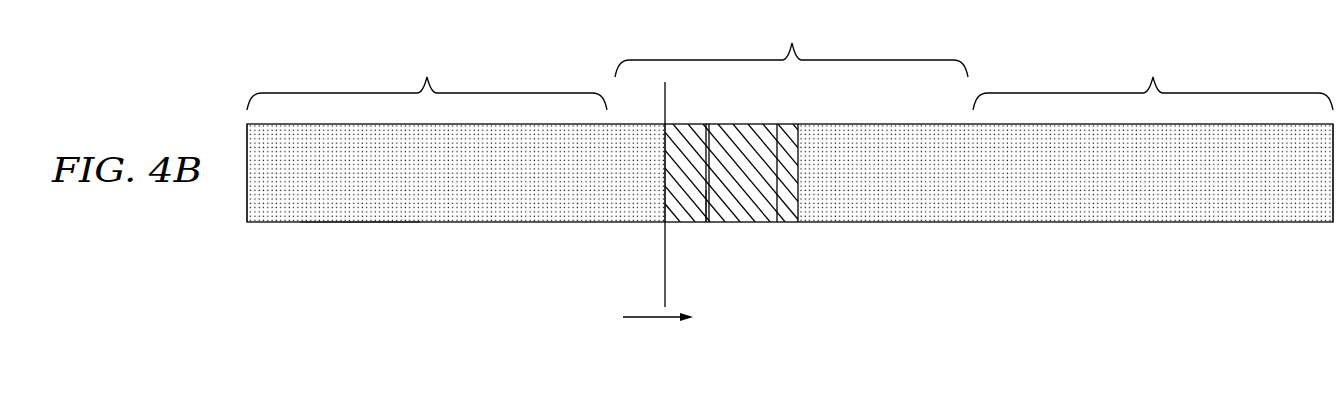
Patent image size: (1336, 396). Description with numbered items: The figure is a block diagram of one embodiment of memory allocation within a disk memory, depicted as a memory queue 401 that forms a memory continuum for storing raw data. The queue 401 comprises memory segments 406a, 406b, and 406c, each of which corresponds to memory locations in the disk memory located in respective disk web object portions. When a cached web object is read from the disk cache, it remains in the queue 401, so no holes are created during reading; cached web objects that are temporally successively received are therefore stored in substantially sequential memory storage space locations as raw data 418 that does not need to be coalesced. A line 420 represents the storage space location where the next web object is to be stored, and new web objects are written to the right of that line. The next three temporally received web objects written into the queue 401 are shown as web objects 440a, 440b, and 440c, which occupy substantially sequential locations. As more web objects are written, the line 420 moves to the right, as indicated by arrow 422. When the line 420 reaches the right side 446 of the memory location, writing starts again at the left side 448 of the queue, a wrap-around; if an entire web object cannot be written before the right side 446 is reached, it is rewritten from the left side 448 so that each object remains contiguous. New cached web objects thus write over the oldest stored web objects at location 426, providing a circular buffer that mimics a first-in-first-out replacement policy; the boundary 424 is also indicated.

The memory queue 401 is at (486, 248).
The memory segment 406a is at (427, 79).
The memory segment 406b is at (791, 45).
The memory segment 406c is at (1153, 78).
The raw data 418 is at (360, 188).
The line 420 is at (665, 288).
The arrow 422 is at (650, 318).
The leading edge 424 is at (660, 175).
The location 426 is at (687, 207).
The web object 440a is at (683, 152).
The web object 440b is at (742, 150).
The web object 440c is at (792, 136).
The right side 446 is at (1328, 174).
The left side 448 is at (252, 175).